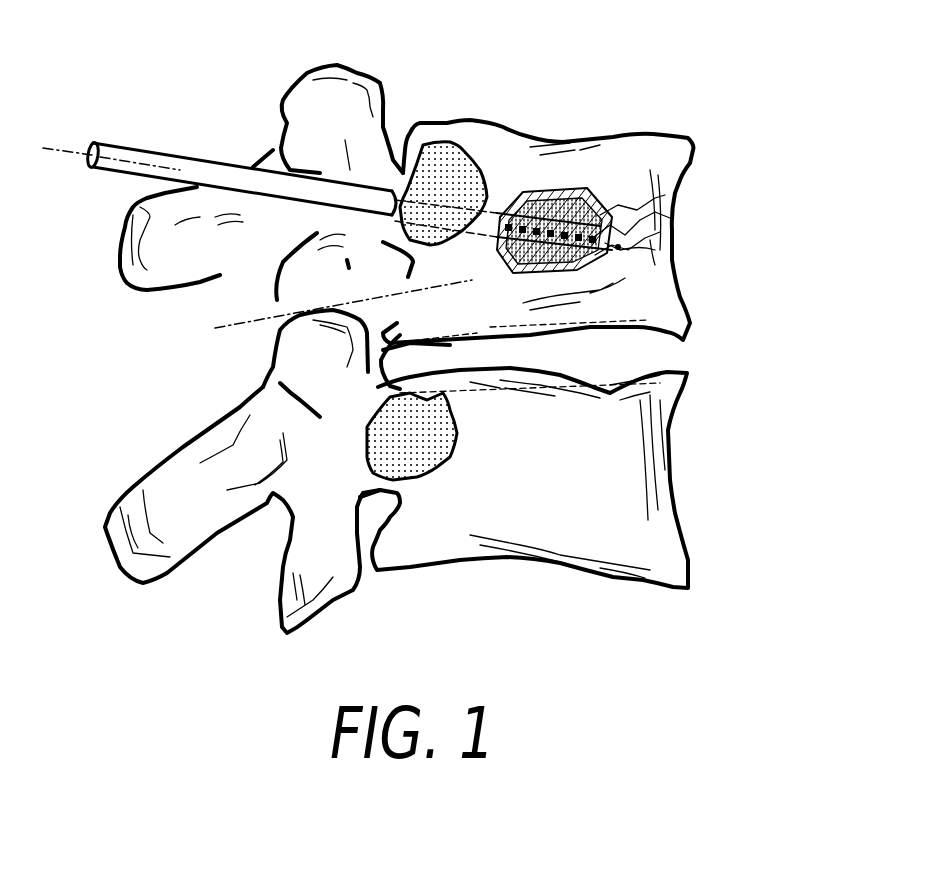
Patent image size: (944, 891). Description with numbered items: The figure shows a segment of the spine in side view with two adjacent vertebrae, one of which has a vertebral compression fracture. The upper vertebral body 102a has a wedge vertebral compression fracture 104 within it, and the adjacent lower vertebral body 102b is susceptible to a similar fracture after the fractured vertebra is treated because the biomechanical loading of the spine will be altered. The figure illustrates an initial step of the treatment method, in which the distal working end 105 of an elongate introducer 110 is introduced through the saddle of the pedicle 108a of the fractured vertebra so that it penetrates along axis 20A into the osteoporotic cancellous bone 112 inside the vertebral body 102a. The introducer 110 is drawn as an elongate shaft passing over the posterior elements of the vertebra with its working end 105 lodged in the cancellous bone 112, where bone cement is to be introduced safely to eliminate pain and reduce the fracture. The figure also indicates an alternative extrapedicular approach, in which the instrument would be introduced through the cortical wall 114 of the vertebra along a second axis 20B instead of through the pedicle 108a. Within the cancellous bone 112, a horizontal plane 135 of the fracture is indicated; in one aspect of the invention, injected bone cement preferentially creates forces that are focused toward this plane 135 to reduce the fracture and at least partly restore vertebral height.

The axis 20A is at (57, 148).
The axis 20B is at (322, 312).
The vertebral body 102a is at (697, 173).
The vertebral body 102b is at (673, 500).
The wedge vertebral compression fracture 104 is at (635, 226).
The distal working end 105 is at (610, 215).
The pedicle 108a is at (380, 168).
The elongate introducer 110 is at (222, 165).
The osteoporotic cancellous bone 112 is at (560, 235).
The cortical wall 114 is at (471, 295).
The horizontal plane 135 is at (537, 188).